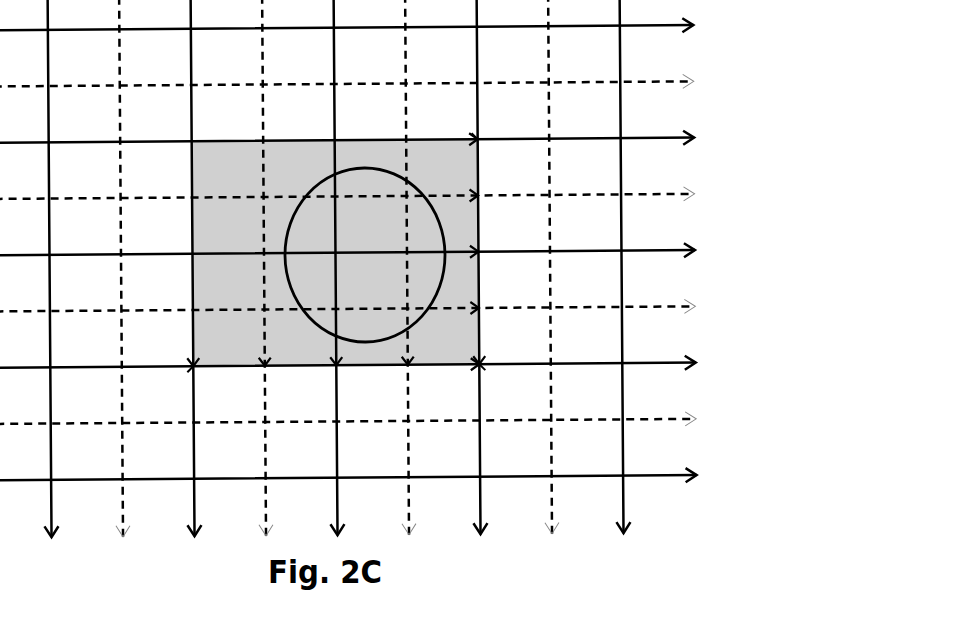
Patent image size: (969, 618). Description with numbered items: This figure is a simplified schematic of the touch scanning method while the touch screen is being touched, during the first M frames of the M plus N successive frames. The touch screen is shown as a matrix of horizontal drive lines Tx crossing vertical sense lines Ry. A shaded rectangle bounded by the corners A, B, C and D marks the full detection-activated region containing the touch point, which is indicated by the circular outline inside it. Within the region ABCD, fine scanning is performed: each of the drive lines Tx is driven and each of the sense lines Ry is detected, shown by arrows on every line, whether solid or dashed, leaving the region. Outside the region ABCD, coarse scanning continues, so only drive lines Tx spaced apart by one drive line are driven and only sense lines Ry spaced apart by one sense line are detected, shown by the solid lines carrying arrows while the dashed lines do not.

The corner of full detection-activated region A is at (320, 236).
The corner of full detection-activated region B is at (491, 121).
The corner of full detection-activated region C is at (179, 383).
The corner of full detection-activated region D is at (494, 381).
The drive lines Tx is at (371, 248).
The sense lines Ry is at (332, 289).